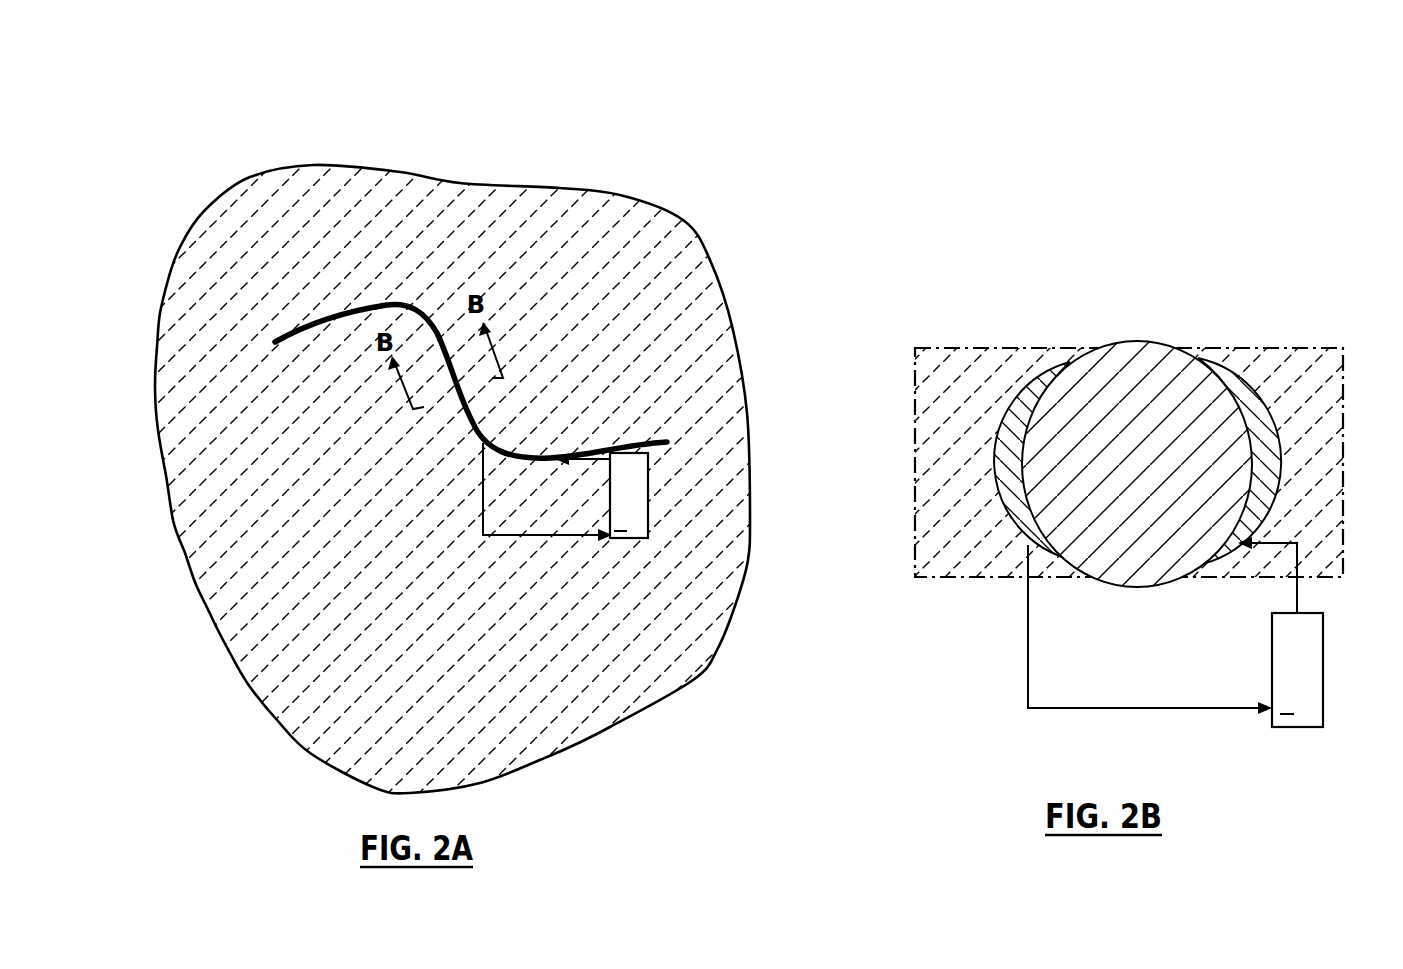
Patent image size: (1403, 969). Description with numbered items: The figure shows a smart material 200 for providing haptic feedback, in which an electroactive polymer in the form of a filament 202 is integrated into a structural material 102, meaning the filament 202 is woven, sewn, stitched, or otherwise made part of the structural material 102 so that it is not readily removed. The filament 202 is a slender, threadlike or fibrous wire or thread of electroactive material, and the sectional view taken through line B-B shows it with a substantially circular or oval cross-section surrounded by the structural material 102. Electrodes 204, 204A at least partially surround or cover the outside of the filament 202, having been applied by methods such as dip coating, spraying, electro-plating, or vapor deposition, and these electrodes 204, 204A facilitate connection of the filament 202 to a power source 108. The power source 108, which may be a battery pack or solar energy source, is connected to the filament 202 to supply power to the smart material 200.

In FIG. 2A, the structural material 102 is at (670, 248).
In FIG. 2B, the structural material 102 is at (1315, 370).
In FIG. 2A, the smart material 200 is at (812, 236).
In FIG. 2A, the filament 202 is at (470, 413).
In FIG. 2B, the filament 202 is at (1160, 478).
In FIG. 2B, the electrode 204 is at (1248, 397).
In FIG. 2B, the electrode 204A is at (1025, 403).
In FIG. 2A, the power source 108 is at (650, 507).
In FIG. 2B, the power source 108 is at (1323, 682).